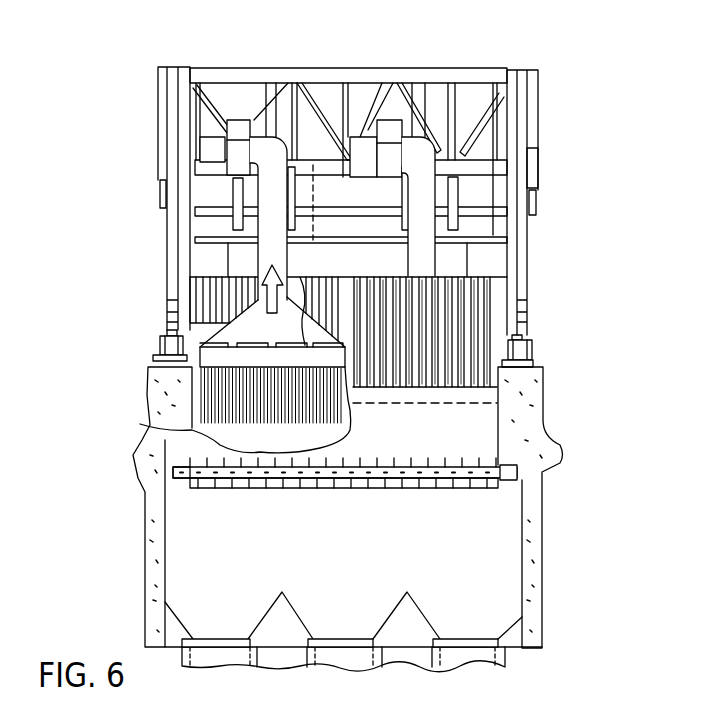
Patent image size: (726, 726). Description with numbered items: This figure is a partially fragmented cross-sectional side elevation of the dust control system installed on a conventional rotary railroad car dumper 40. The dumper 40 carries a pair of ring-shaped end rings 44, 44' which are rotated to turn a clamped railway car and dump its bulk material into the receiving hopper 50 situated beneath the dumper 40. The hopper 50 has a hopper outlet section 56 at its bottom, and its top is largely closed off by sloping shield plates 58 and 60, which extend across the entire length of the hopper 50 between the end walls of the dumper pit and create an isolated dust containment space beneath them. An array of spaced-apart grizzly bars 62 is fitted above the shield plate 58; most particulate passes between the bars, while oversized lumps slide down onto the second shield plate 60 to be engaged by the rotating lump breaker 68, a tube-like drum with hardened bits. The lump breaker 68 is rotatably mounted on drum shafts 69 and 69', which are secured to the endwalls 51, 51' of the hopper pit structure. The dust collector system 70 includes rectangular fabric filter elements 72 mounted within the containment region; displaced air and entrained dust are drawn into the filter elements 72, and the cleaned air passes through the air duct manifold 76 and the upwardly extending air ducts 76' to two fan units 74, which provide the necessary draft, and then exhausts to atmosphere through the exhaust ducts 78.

The rotary railroad car dumper 40 is at (555, 118).
The end ring 44 is at (552, 218).
The end ring 44' is at (138, 214).
The receiving hopper 50 is at (556, 582).
The endwall 51 is at (553, 507).
The endwall 51' is at (142, 507).
The hopper outlet section 56 is at (465, 642).
The shield plate 58 is at (428, 405).
The second shield plate 60 is at (377, 490).
The grizzly bars 62 is at (383, 372).
The lump breaker 68 is at (212, 482).
The drum shaft 69 is at (560, 484).
The drum shaft 69' is at (138, 483).
The dust collector system 70 is at (323, 92).
The fabric filter elements 72 is at (148, 429).
The fan unit 74 is at (240, 125).
The air duct manifold 76 is at (272, 252).
The air duct 76' is at (361, 206).
The exhaust duct 78 is at (208, 140).